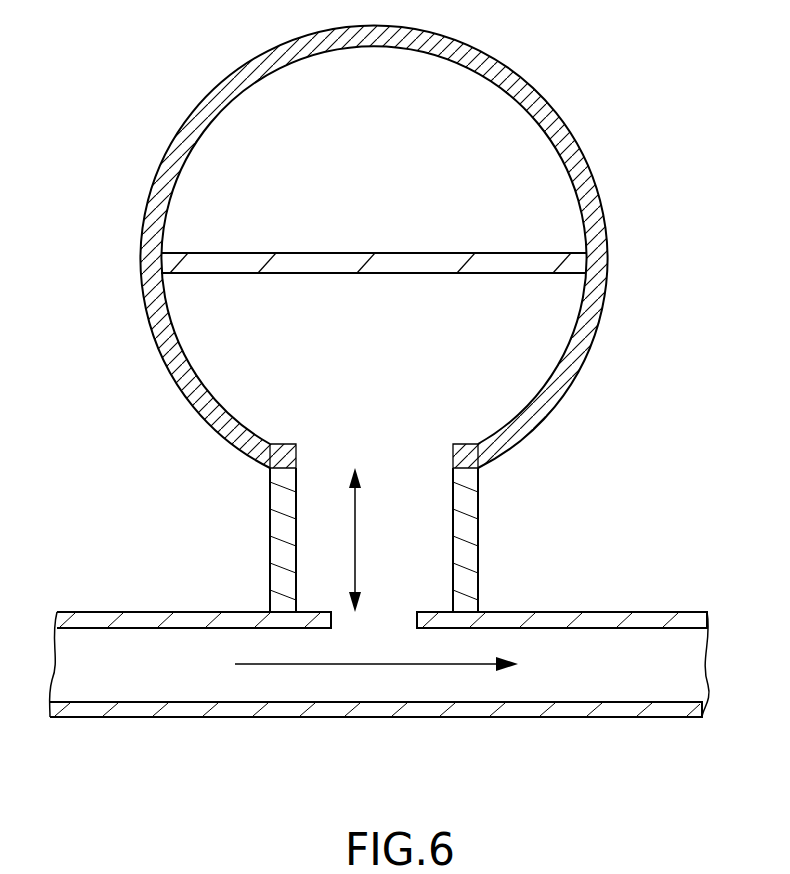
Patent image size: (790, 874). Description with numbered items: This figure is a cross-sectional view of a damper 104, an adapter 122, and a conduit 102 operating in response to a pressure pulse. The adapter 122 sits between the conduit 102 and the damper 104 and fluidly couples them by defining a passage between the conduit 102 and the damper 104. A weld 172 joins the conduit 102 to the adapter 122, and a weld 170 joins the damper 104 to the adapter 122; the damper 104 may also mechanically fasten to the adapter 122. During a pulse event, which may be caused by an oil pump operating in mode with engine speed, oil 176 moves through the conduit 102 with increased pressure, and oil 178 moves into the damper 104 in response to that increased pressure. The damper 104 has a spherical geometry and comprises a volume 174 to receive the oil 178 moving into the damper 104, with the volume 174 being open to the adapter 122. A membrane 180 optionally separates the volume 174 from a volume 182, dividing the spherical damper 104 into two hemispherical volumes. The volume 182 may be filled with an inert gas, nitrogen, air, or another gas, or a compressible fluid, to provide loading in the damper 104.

The conduit 102 is at (653, 620).
The damper 104 is at (587, 153).
The adapter 122 is at (477, 535).
The weld 170 is at (485, 462).
The weld 172 is at (467, 612).
The volume 174 is at (532, 322).
The oil 176 is at (452, 664).
The oil 178 is at (355, 535).
The membrane 180 is at (183, 267).
The volume 182 is at (492, 115).